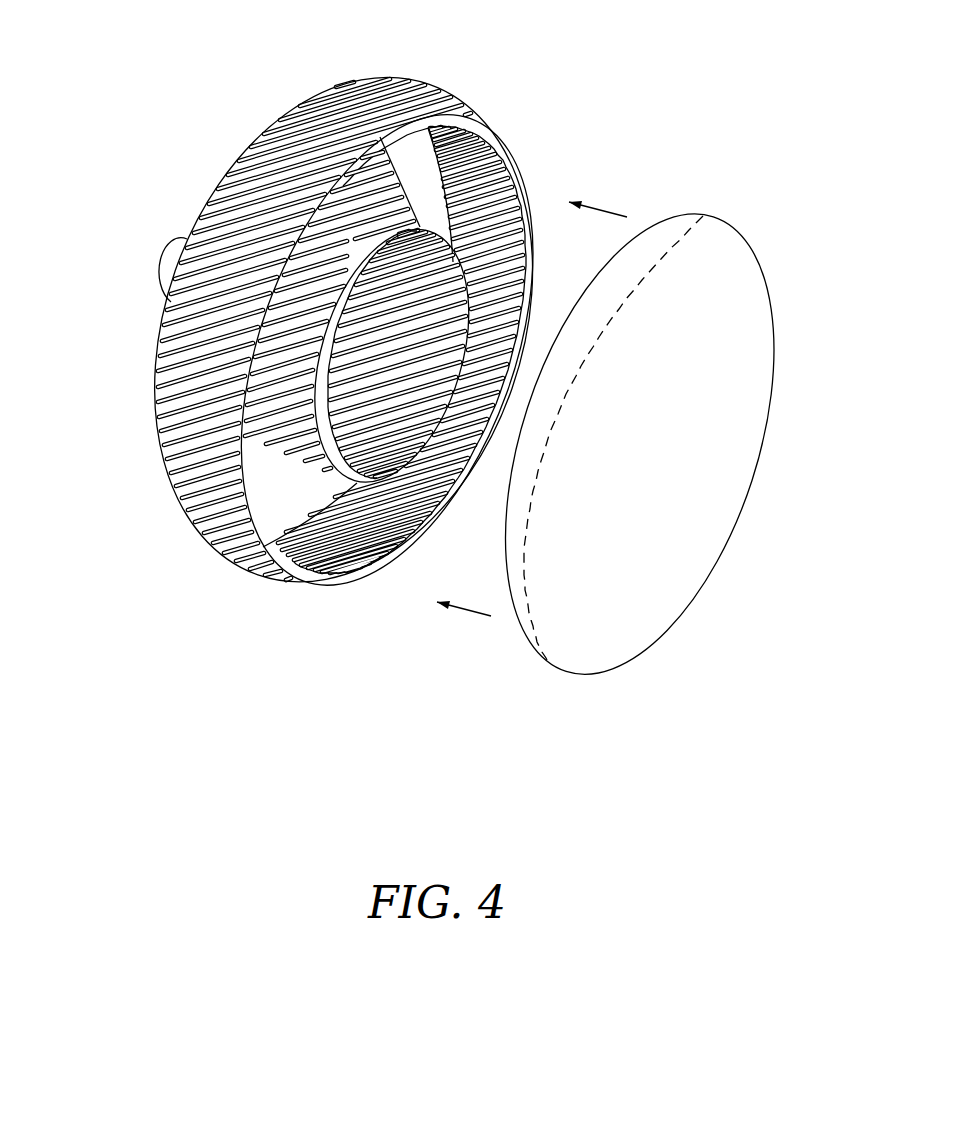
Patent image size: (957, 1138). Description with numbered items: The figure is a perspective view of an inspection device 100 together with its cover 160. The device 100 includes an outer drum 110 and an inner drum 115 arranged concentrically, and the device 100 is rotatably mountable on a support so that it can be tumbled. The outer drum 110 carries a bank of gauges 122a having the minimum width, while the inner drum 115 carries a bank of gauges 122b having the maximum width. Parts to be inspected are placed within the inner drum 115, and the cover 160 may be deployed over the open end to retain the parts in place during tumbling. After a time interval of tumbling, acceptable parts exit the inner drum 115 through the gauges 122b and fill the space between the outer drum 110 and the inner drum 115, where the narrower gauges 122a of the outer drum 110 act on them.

The device 100 is at (440, 72).
The outer drum 110 is at (206, 216).
The inner drum 115 is at (455, 255).
The bank of gauges 122a is at (166, 390).
The bank of gauges 122b is at (352, 232).
The cover 160 is at (741, 254).